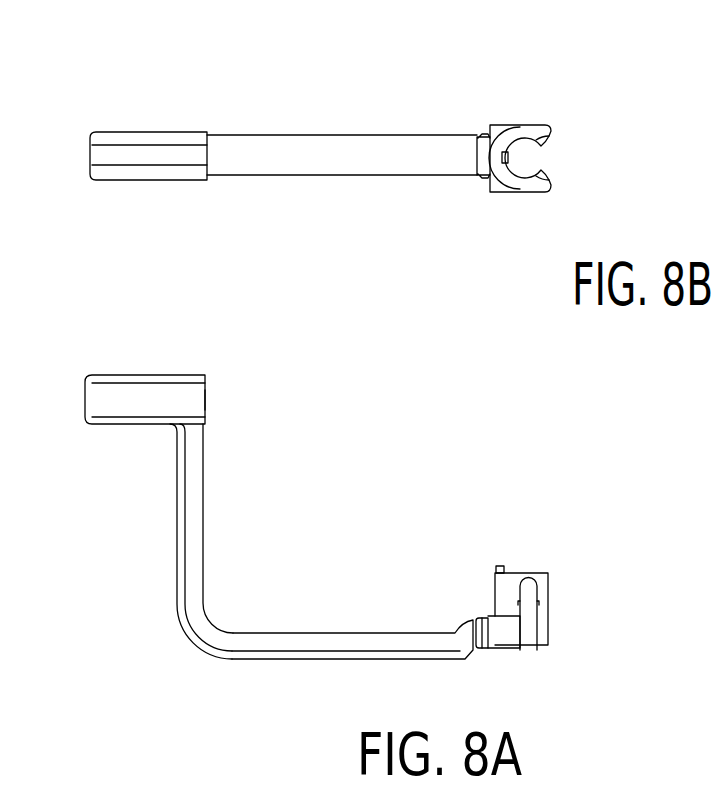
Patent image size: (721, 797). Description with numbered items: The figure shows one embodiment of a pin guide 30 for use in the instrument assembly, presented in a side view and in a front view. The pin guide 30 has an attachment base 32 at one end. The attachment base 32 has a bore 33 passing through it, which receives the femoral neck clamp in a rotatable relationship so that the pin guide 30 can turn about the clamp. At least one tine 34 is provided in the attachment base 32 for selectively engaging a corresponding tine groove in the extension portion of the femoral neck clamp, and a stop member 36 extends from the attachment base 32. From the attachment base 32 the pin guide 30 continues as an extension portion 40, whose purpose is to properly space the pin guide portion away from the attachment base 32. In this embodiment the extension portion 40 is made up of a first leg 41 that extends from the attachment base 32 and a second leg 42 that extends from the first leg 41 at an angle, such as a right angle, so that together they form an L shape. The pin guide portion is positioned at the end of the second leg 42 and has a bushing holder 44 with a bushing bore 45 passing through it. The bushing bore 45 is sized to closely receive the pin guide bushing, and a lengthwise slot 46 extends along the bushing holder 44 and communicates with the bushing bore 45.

In FIG. 8A, the pin guide 30 is at (316, 475).
In FIG. 8A, the attachment base 32 is at (548, 603).
In FIG. 8B, the bore 33 is at (538, 153).
In FIG. 8B, the tine 34 is at (536, 130).
In FIG. 8A, the tine 34 is at (528, 650).
In FIG. 8A, the stop member 36 is at (498, 566).
In FIG. 8B, the extension portion 40 is at (348, 143).
In FIG. 8A, the first leg 41 is at (327, 636).
In FIG. 8A, the second leg 42 is at (195, 507).
In FIG. 8A, the bushing holder 44 is at (98, 373).
In FIG. 8A, the bushing bore 45 is at (210, 398).
In FIG. 8B, the lengthwise slot 46 is at (156, 155).